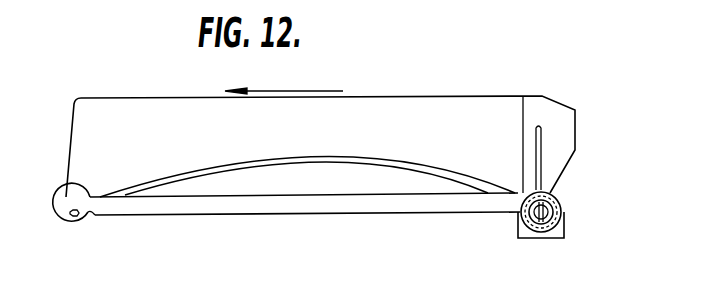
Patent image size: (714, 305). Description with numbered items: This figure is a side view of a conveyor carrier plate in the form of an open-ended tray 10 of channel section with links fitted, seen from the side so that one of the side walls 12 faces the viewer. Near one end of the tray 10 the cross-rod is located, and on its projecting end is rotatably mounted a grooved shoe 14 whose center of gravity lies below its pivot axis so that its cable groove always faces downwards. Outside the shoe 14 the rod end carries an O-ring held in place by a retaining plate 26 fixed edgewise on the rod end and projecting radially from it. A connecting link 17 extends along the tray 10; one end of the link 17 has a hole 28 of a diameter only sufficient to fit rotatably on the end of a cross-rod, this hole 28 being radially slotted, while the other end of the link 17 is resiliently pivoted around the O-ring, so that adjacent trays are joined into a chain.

The tray 10 is at (376, 96).
The side walls 12 is at (315, 145).
The shoe 14 is at (561, 222).
The connecting link 17 is at (277, 208).
The retaining plate 26 is at (549, 220).
The hole 28 is at (79, 216).